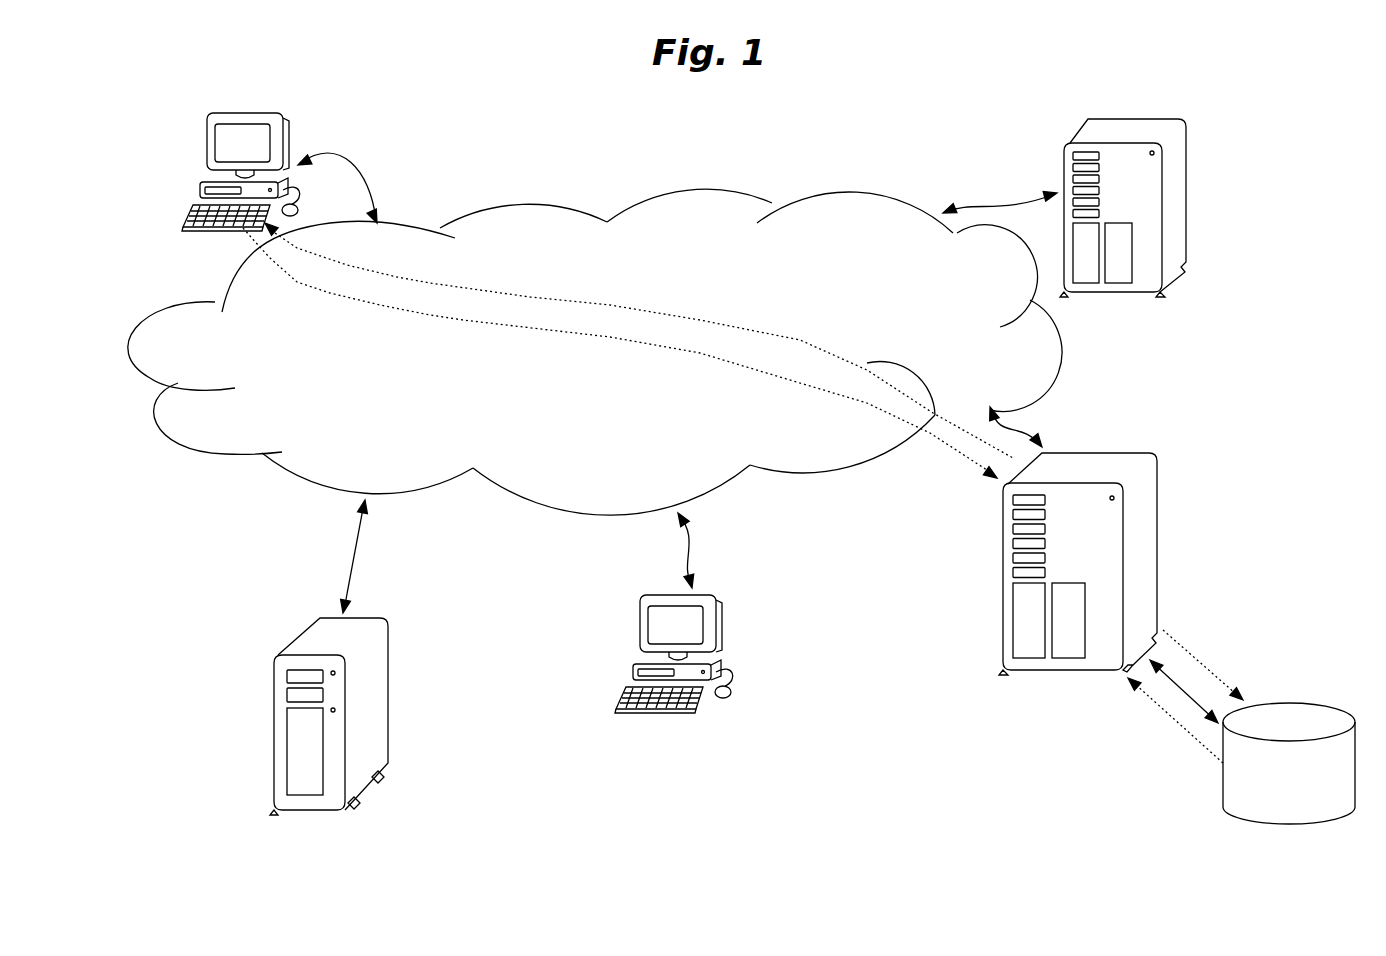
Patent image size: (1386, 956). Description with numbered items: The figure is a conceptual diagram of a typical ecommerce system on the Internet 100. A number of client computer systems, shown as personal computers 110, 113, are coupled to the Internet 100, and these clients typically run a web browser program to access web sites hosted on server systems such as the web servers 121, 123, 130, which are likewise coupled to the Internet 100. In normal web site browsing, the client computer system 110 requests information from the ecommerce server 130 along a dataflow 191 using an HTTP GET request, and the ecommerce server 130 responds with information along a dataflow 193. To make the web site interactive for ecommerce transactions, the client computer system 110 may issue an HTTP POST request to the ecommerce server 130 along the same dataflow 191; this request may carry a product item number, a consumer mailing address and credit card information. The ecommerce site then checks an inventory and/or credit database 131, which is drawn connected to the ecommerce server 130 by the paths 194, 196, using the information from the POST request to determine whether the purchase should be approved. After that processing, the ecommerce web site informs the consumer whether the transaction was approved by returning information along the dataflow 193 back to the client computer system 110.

The Internet 100 is at (595, 352).
The personal computer 110 is at (285, 116).
The personal computer 113 is at (650, 617).
The web server 121 is at (378, 700).
The web server 123 is at (1180, 250).
The ecommerce server 130 is at (1082, 465).
The inventory and/or credit database 131 is at (1289, 763).
The dataflow 191 is at (620, 353).
The dataflow 193 is at (639, 340).
The data path to database 194 is at (1207, 659).
The data path from database 196 is at (1175, 720).